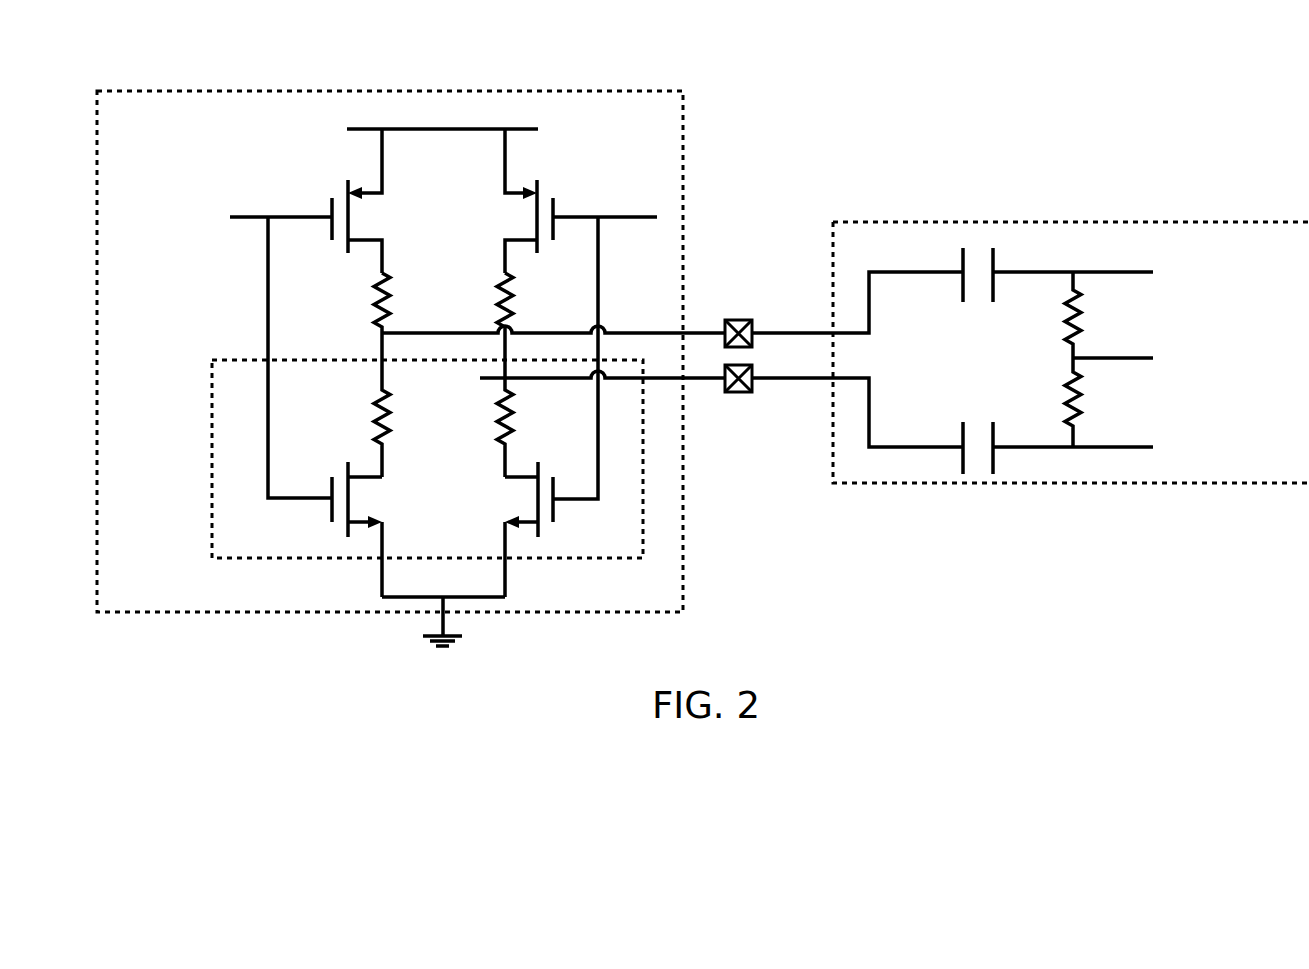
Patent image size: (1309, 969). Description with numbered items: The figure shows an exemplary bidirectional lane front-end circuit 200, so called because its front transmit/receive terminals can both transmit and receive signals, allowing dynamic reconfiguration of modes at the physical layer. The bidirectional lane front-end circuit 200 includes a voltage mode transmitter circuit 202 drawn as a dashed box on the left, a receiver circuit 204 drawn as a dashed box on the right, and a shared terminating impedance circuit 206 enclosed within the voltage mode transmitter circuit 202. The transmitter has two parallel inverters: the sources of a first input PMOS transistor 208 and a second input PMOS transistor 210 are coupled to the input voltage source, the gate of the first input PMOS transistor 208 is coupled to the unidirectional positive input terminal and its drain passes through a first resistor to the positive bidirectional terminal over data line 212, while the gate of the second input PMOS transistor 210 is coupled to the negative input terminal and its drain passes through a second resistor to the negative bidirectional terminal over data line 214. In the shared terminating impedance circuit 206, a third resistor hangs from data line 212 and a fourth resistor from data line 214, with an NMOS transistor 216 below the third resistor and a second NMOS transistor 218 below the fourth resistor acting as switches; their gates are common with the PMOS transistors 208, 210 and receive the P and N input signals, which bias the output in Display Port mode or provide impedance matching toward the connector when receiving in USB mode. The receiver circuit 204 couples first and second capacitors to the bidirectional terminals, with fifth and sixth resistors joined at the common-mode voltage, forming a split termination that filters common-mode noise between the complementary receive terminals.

The bidirectional lane front-end circuit 200 is at (1086, 76).
The voltage mode transmitter circuit 202 is at (238, 91).
The receiver circuit 204 is at (918, 222).
The shared terminating impedance circuit 206 is at (211, 400).
The first input PMOS transistor 208 is at (330, 198).
The second input PMOS transistor 210 is at (553, 198).
The data line 212 is at (382, 333).
The data line 214 is at (480, 378).
The NMOS transistor 216 is at (332, 518).
The second NMOS transistor 218 is at (560, 512).